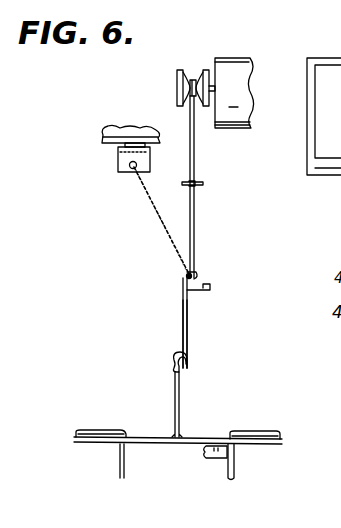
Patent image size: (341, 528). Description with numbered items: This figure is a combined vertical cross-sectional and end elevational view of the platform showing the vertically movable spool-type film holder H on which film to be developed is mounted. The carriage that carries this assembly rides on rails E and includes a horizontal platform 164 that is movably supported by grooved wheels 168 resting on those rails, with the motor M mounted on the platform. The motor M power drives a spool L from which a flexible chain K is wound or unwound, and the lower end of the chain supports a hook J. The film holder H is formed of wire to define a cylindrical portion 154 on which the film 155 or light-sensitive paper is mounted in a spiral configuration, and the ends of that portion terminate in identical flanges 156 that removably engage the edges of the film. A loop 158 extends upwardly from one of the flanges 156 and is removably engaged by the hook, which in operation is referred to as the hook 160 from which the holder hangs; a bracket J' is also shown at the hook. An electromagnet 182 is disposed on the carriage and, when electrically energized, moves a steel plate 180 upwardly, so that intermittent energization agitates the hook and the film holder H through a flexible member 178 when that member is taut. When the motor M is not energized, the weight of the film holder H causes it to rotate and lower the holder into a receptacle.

The rails E is at (324, 101).
The motor M is at (234, 93).
The spool L is at (186, 72).
The flexible chain K is at (196, 232).
The electromagnet 182 is at (147, 125).
The steel plate 180 is at (118, 168).
The chain 178 is at (162, 220).
The grooved wheels 168 is at (195, 276).
The bracket J' is at (230, 282).
The hook J is at (208, 323).
The horizontal platform 164 is at (189, 308).
The hook 160 is at (186, 367).
The loop 158 is at (181, 388).
The flanges 156 is at (262, 433).
The cylindrical portion 154 is at (118, 465).
The film 155 is at (224, 452).
The film holder H is at (239, 468).